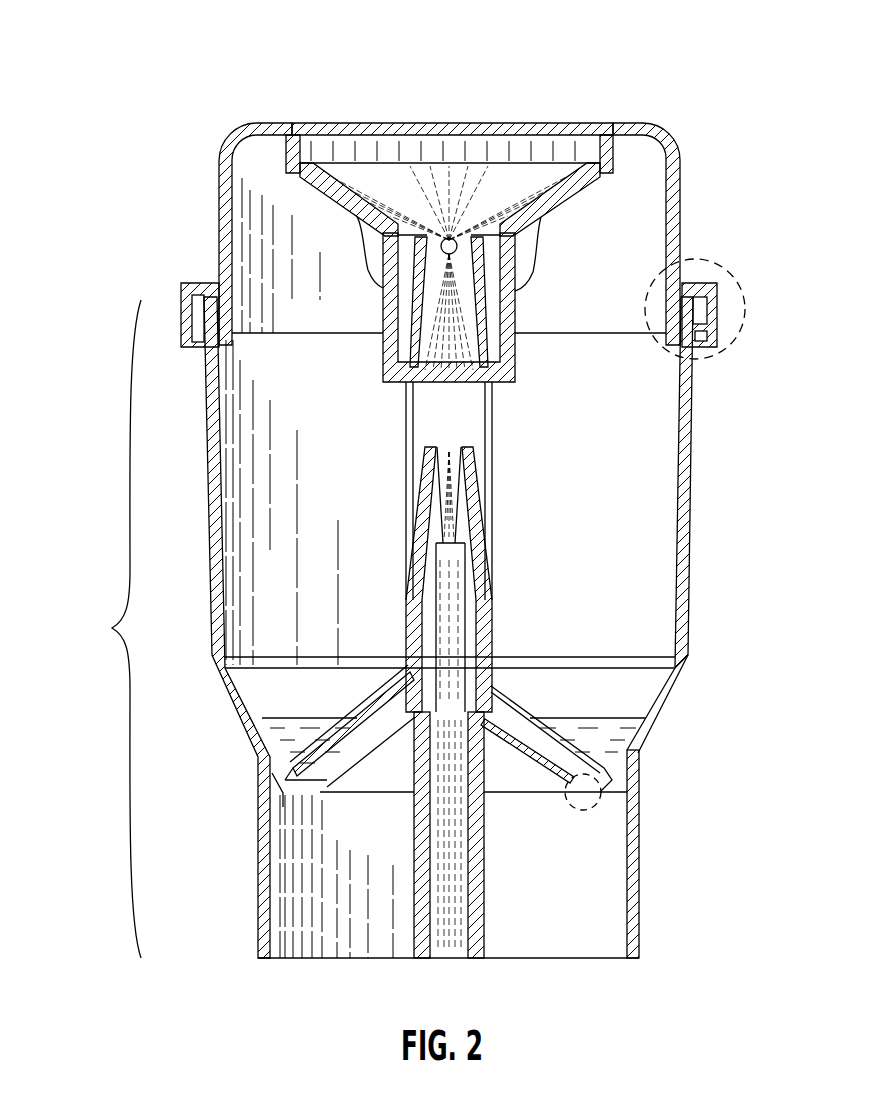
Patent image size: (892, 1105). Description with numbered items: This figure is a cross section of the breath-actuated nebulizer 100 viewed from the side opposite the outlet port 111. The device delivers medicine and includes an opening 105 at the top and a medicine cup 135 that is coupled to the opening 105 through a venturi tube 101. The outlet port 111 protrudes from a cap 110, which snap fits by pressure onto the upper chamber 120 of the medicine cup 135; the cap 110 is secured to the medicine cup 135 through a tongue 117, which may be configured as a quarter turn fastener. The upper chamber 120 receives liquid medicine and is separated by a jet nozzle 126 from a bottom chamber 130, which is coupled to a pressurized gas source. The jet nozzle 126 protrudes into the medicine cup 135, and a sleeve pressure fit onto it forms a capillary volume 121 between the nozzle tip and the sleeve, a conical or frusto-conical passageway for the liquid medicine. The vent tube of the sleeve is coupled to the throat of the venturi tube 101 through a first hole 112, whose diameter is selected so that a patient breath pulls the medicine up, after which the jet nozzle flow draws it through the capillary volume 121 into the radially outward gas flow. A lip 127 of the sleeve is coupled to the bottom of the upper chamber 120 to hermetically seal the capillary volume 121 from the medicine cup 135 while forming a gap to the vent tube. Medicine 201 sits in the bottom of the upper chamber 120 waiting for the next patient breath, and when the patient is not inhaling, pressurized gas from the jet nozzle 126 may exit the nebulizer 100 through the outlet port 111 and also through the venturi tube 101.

The breath-actuated nebulizer 100 is at (148, 40).
The opening 105 is at (430, 152).
The outlet port 111 is at (376, 241).
The venturi tube 101 is at (474, 204).
The cap 110 is at (326, 304).
The first hole 112 is at (515, 286).
The tongue 117 is at (742, 278).
The capillary volume 121 is at (424, 461).
The upper chamber 120 is at (328, 576).
The medicine 201 is at (592, 720).
The lip 127 is at (657, 729).
The jet nozzle 126 is at (455, 700).
The bottom chamber 130 is at (581, 884).
The medicine cup 135 is at (102, 629).